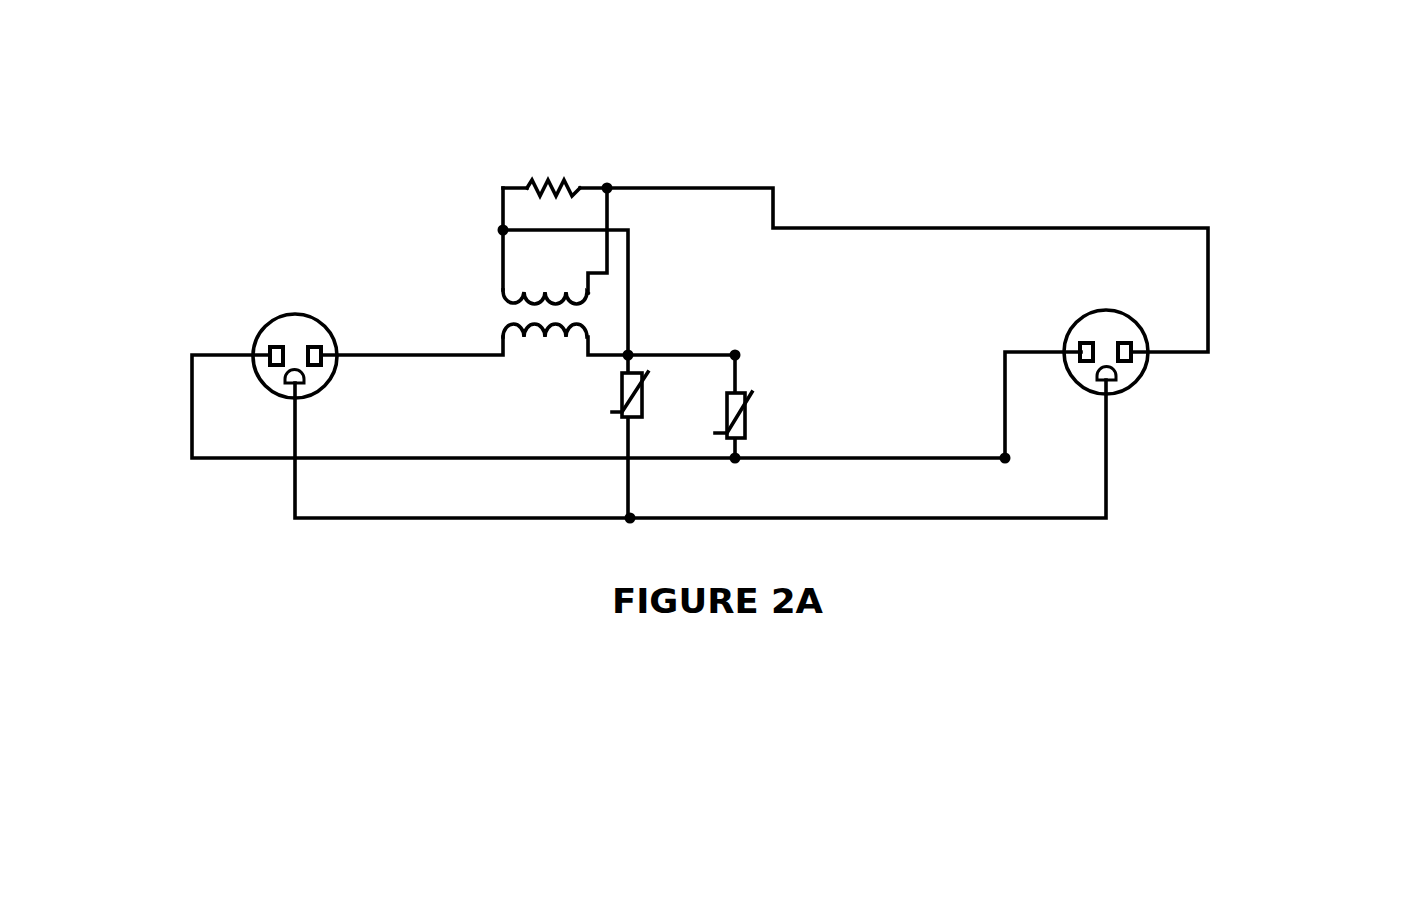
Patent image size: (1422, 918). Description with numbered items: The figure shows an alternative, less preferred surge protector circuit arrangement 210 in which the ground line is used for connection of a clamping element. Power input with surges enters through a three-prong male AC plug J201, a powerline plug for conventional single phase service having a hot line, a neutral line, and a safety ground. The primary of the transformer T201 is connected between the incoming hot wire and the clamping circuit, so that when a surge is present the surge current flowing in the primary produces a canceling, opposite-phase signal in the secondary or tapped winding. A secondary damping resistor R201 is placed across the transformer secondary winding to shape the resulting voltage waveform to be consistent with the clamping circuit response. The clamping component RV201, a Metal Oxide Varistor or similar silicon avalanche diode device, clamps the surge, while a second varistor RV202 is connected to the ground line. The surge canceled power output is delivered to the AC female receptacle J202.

The surge protector circuit arrangement 210 is at (1163, 143).
The three-prong male AC plug J201 is at (372, 361).
The AC female receptacle J202 is at (1179, 370).
The secondary damping resistor R201 is at (562, 169).
The transformer T201 is at (545, 334).
The Metal Oxide Varistor RV201 is at (831, 406).
The varistor (SAD) RV202 is at (542, 432).